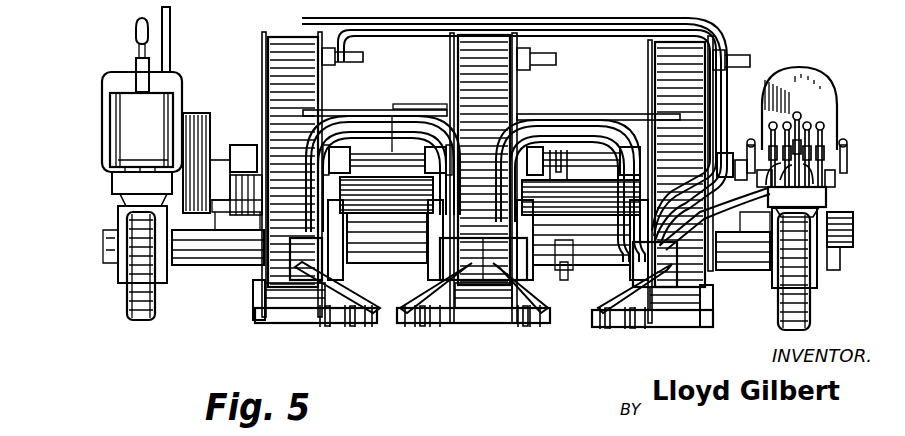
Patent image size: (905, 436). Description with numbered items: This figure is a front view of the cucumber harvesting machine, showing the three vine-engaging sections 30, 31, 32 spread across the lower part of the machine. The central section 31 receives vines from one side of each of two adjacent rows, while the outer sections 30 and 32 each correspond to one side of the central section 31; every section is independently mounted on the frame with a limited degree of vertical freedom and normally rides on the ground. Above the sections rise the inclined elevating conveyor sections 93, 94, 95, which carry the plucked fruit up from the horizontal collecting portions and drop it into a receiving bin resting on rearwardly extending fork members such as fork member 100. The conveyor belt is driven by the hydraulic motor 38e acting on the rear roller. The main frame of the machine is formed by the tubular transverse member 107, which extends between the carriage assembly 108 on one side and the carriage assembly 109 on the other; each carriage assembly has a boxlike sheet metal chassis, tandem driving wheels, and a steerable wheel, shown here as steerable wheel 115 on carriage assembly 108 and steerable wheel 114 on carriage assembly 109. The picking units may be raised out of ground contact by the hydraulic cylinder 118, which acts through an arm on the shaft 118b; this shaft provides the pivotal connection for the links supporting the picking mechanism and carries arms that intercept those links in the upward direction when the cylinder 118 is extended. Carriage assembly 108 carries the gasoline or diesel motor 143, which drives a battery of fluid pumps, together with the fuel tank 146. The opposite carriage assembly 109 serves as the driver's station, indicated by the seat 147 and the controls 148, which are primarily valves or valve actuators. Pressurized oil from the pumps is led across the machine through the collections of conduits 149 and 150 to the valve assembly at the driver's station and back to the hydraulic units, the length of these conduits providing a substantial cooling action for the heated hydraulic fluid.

The vine-engaging section 30 is at (306, 336).
The central vine-engaging section 31 is at (501, 337).
The vine-engaging section 32 is at (670, 337).
The hydraulic motor 38e is at (556, 63).
The elevating conveyor section 93 is at (285, 38).
The elevating conveyor section 94 is at (486, 38).
The elevating conveyor section 95 is at (682, 40).
The fork member 100 is at (767, 4).
The tubular transverse member 107 is at (208, 265).
The carriage assembly 108 is at (106, 216).
The carriage assembly 109 is at (839, 204).
The steerable wheel 114 is at (812, 306).
The steerable wheel 115 is at (127, 296).
The hydraulic cylinder 118 is at (584, 232).
The shaft 118b is at (605, 162).
The motor 143 is at (103, 90).
The fuel tank 146 is at (110, 130).
The seat 147 is at (834, 92).
The controls 148 is at (790, 124).
The conduits 149 is at (338, 18).
The conduits 150 is at (333, 105).